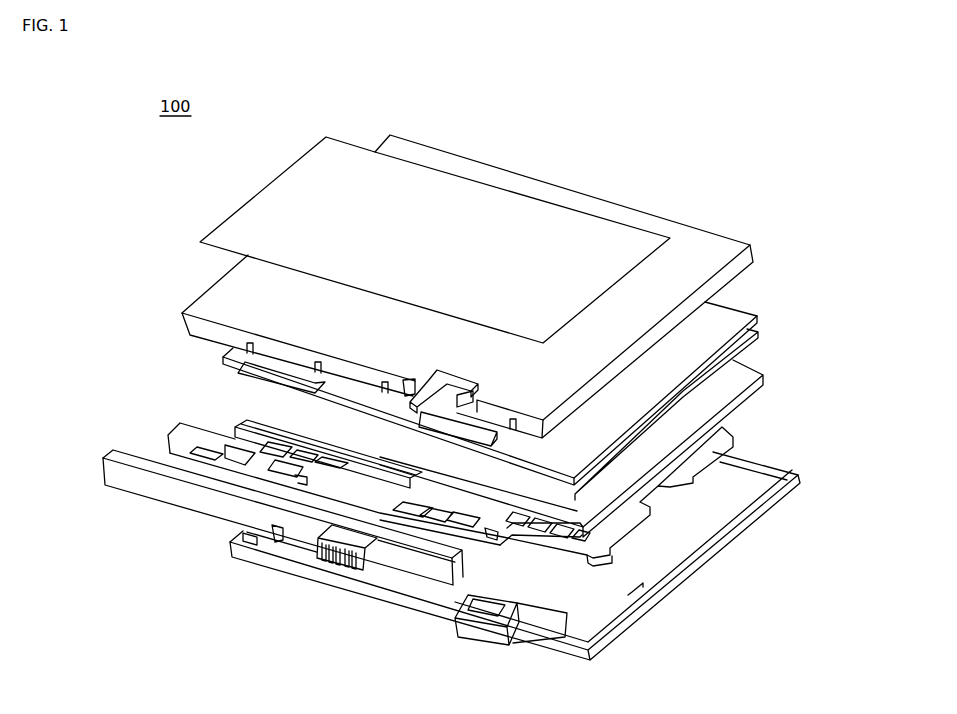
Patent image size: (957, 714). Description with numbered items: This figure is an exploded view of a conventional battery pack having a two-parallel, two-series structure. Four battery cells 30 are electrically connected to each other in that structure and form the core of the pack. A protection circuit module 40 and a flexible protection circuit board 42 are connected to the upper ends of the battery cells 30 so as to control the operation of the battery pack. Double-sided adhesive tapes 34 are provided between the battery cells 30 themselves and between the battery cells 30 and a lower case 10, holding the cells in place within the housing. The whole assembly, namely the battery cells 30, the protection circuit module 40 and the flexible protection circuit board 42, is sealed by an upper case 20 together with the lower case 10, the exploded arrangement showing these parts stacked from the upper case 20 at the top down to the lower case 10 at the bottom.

The lower case 10 is at (788, 462).
The upper case 20 is at (713, 235).
The battery cells 30 is at (743, 373).
The double-sided adhesive tapes 34 is at (725, 442).
The protection circuit module 40 is at (157, 503).
The flexible protection circuit board (FPCB) 42 is at (166, 427).